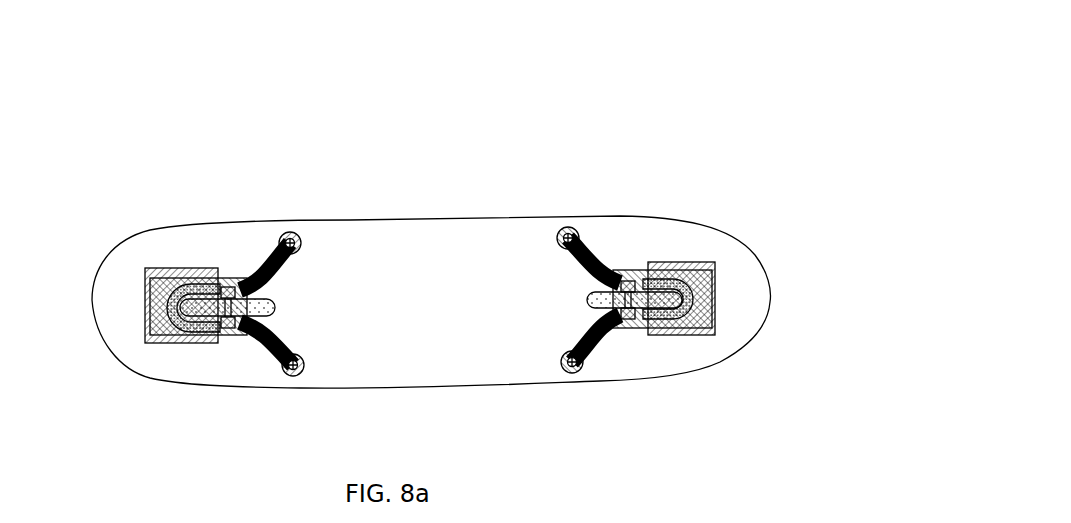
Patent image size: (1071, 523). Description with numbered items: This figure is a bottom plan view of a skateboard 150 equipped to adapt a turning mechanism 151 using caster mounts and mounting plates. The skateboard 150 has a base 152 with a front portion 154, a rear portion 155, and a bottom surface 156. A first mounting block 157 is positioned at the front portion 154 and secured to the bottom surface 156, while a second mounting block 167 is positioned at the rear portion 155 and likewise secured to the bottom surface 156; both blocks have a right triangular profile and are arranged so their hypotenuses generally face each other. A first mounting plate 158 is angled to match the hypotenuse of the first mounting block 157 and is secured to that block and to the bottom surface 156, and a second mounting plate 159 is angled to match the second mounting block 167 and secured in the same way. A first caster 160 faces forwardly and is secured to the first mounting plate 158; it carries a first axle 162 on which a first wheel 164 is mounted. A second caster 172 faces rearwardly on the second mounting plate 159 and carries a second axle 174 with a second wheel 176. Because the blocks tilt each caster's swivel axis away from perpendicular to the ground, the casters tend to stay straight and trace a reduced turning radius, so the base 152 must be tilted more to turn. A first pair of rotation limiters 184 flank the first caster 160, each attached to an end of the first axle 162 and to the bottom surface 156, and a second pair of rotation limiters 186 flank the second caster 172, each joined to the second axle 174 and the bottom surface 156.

The skateboard 150 is at (554, 106).
The turning mechanism 151 is at (150, 368).
The base 152 is at (422, 220).
The front portion 154 is at (220, 240).
The rear portion 155 is at (648, 228).
The bottom surface 156 is at (440, 338).
The first mounting block 157 is at (196, 268).
The first mounting plate 158 is at (160, 278).
The second mounting plate 159 is at (700, 335).
The first caster 160 is at (178, 307).
The first axle 162 is at (221, 333).
The first wheel 164 is at (276, 306).
The second mounting block 167 is at (680, 262).
The second caster 172 is at (665, 326).
The second axle 174 is at (623, 319).
The second wheel 176 is at (588, 296).
The first pair of rotation limiters 184 is at (272, 264).
The second pair of rotation limiters 186 is at (586, 242).